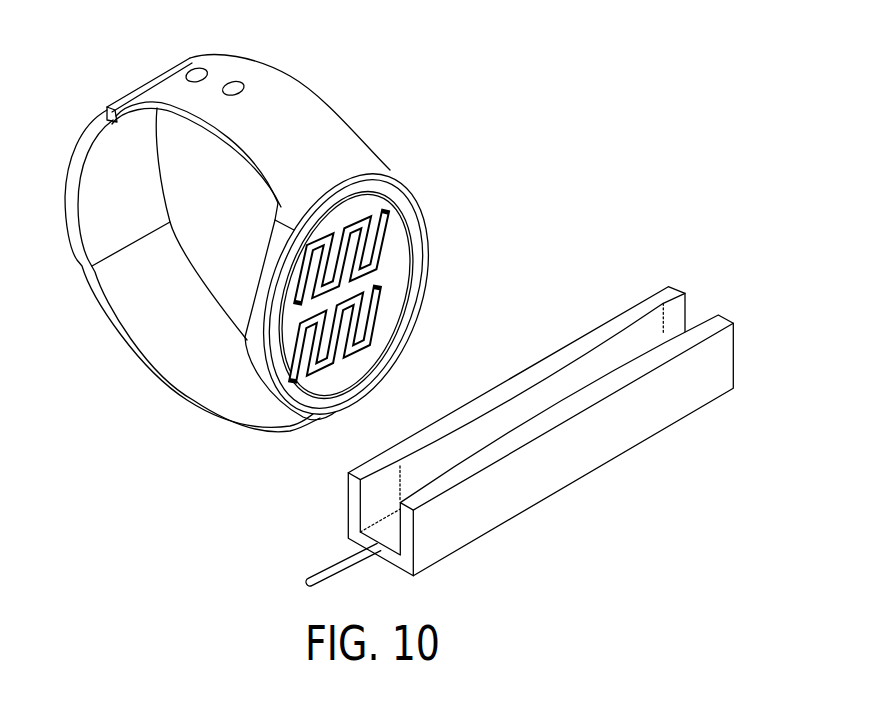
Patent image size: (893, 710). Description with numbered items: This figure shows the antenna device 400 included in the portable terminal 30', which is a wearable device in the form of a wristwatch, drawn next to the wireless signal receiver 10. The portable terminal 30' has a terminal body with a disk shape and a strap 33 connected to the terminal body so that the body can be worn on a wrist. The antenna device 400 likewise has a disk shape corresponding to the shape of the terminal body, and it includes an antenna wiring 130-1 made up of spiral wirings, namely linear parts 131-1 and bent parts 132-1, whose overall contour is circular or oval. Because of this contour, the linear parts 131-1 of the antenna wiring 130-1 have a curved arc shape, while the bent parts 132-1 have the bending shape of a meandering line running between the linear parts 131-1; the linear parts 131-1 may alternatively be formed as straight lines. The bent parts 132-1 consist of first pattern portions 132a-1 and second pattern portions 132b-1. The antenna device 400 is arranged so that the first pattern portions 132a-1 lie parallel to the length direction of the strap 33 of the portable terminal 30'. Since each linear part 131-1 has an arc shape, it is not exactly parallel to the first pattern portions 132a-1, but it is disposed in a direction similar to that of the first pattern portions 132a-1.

The wireless signal receiver 10 is at (697, 294).
The portable terminal 30' is at (311, 314).
The strap 33 is at (287, 100).
The antenna device 400 is at (378, 198).
The antenna wiring 130-1 is at (298, 563).
The linear parts 131-1 is at (281, 351).
The bent parts 132-1 is at (343, 365).
The first pattern portions 132a-1 is at (377, 299).
The second pattern portions 132b-1 is at (400, 263).